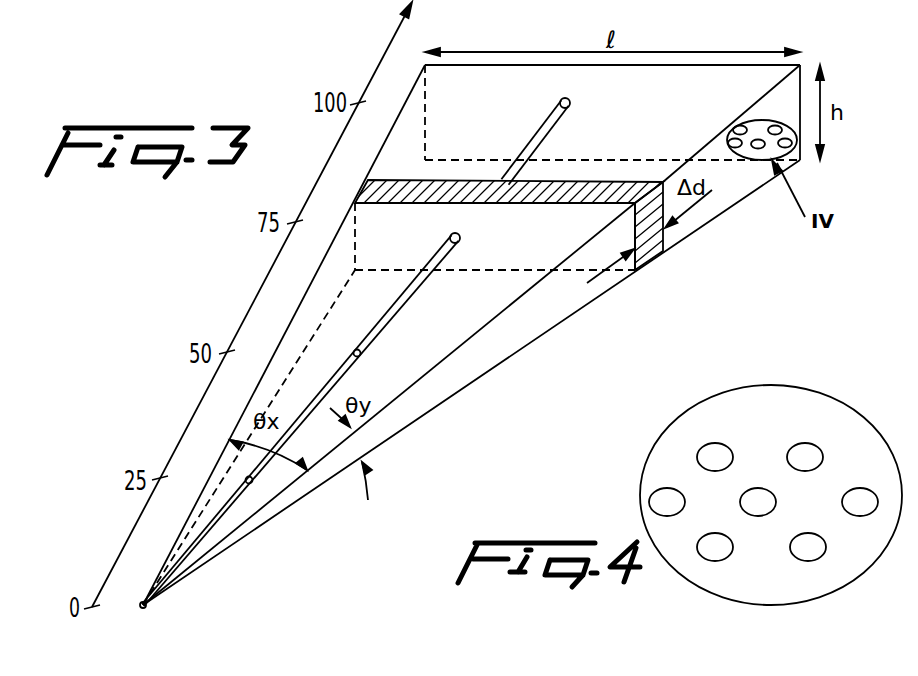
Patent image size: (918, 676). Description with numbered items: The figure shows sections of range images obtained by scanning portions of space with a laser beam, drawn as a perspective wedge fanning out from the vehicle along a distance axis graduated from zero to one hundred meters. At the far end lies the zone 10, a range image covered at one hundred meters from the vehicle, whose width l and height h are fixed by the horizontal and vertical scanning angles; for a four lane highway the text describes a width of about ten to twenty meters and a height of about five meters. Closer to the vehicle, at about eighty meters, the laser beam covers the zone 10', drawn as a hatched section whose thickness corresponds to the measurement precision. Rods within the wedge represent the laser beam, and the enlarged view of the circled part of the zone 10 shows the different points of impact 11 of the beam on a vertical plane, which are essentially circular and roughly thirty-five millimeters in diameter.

In FIG. 3, the zone 10 is at (612, 93).
In FIG. 4, the zone 10 is at (771, 471).
In FIG. 3, the points of impact 11 is at (570, 103).
In FIG. 4, the points of impact 11 is at (860, 508).
In FIG. 3, the zone 10' is at (507, 259).